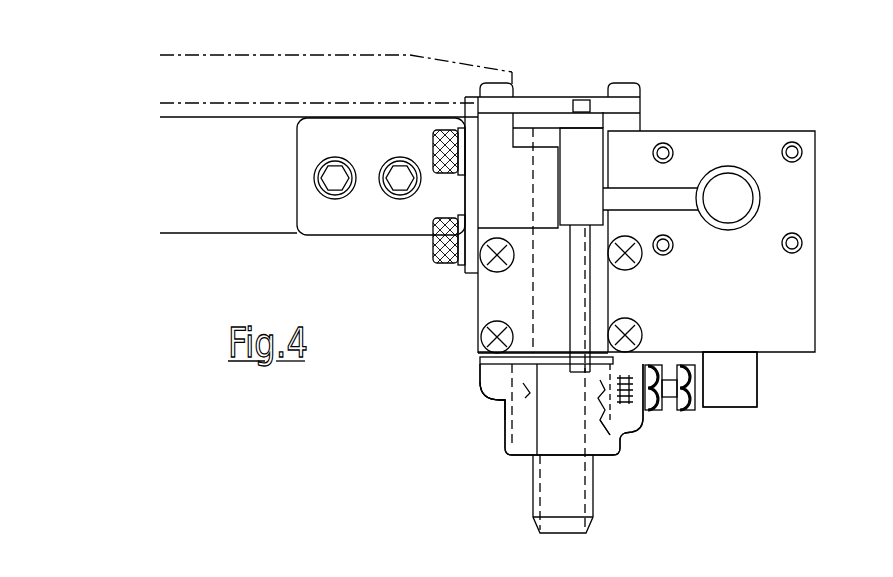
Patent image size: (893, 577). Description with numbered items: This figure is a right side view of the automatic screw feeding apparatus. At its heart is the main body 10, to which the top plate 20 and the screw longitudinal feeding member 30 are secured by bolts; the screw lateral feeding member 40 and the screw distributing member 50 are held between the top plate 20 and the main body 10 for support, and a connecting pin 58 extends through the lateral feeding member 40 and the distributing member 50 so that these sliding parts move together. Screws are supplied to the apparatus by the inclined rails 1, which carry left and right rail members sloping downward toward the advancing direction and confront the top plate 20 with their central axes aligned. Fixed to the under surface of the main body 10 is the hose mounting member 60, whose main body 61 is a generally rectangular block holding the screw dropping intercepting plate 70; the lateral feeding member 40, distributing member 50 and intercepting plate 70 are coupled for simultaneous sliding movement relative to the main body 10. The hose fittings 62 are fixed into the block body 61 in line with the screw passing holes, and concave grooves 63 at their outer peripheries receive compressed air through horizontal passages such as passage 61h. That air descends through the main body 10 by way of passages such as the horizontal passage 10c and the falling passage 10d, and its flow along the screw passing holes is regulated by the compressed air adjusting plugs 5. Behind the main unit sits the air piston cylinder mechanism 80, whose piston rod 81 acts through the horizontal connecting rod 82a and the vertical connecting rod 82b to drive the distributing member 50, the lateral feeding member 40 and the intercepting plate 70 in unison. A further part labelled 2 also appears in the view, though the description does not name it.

The inclined rails 1 is at (283, 122).
The bracket 2 is at (757, 375).
The compressed air adjusting plugs 5 is at (661, 412).
The main body 10 is at (483, 188).
The horizontal passage 10c is at (644, 333).
The falling passage 10d is at (650, 347).
The top plate 20 is at (527, 96).
The screw longitudinal feeding member 30 is at (598, 118).
The screw lateral feeding member 40 is at (558, 110).
The screw distributing member 50 is at (592, 166).
The connecting pin 58 is at (580, 100).
The hose mounting member 60 is at (503, 458).
The main body of hose mounting member 61 is at (503, 422).
The horizontal passage 61h is at (619, 453).
The hose fittings 62 is at (586, 507).
The concave grooves 63 is at (505, 400).
The screw dropping intercepting plate 70 is at (483, 359).
The air piston cylinder mechanism 80 is at (784, 323).
The piston rod 81 is at (738, 187).
The horizontal connecting rod 82a is at (677, 190).
The vertical connecting rod 82b is at (573, 275).